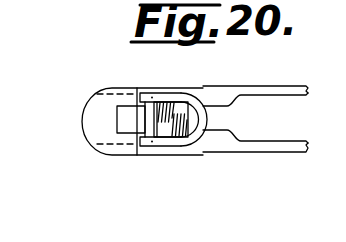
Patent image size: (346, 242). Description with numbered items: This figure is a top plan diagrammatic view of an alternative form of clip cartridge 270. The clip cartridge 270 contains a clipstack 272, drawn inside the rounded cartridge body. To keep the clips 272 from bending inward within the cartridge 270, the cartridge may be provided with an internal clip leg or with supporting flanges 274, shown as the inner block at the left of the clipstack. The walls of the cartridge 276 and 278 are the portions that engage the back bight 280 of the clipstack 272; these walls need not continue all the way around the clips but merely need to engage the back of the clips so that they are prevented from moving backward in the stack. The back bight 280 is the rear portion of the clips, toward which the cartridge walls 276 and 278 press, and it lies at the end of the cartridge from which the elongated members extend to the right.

The clip cartridge 270 is at (92, 93).
The clipstack 272 is at (163, 96).
The supporting flanges 274 is at (144, 108).
The wall of the cartridge 276 is at (188, 148).
The wall of the cartridge 278 is at (200, 99).
The back bight 280 is at (208, 121).